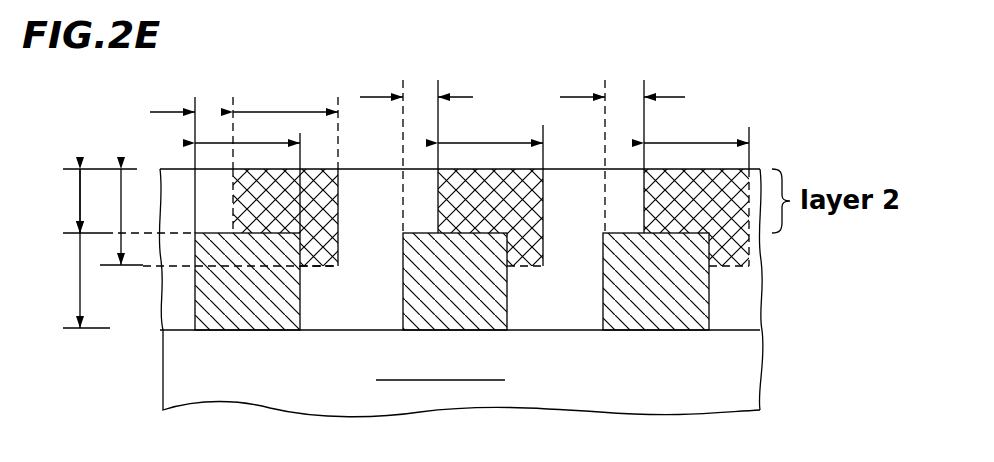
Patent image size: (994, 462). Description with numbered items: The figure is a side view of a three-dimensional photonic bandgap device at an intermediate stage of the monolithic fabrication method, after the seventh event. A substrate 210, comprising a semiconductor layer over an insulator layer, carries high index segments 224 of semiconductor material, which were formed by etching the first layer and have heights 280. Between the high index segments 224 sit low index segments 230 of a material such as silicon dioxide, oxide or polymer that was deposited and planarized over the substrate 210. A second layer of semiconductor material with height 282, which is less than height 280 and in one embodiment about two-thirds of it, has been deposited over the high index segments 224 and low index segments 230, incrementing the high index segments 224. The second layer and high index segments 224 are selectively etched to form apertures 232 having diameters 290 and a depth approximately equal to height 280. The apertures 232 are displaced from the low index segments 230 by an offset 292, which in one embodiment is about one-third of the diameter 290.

The substrate 210 is at (180, 387).
The high index segments 224 is at (171, 288).
The low index segments 230 is at (228, 306).
The apertures 232 is at (244, 210).
The height 280 is at (120, 213).
The height 282 is at (78, 195).
The diameter 290 is at (279, 111).
The offset 292 is at (161, 110).